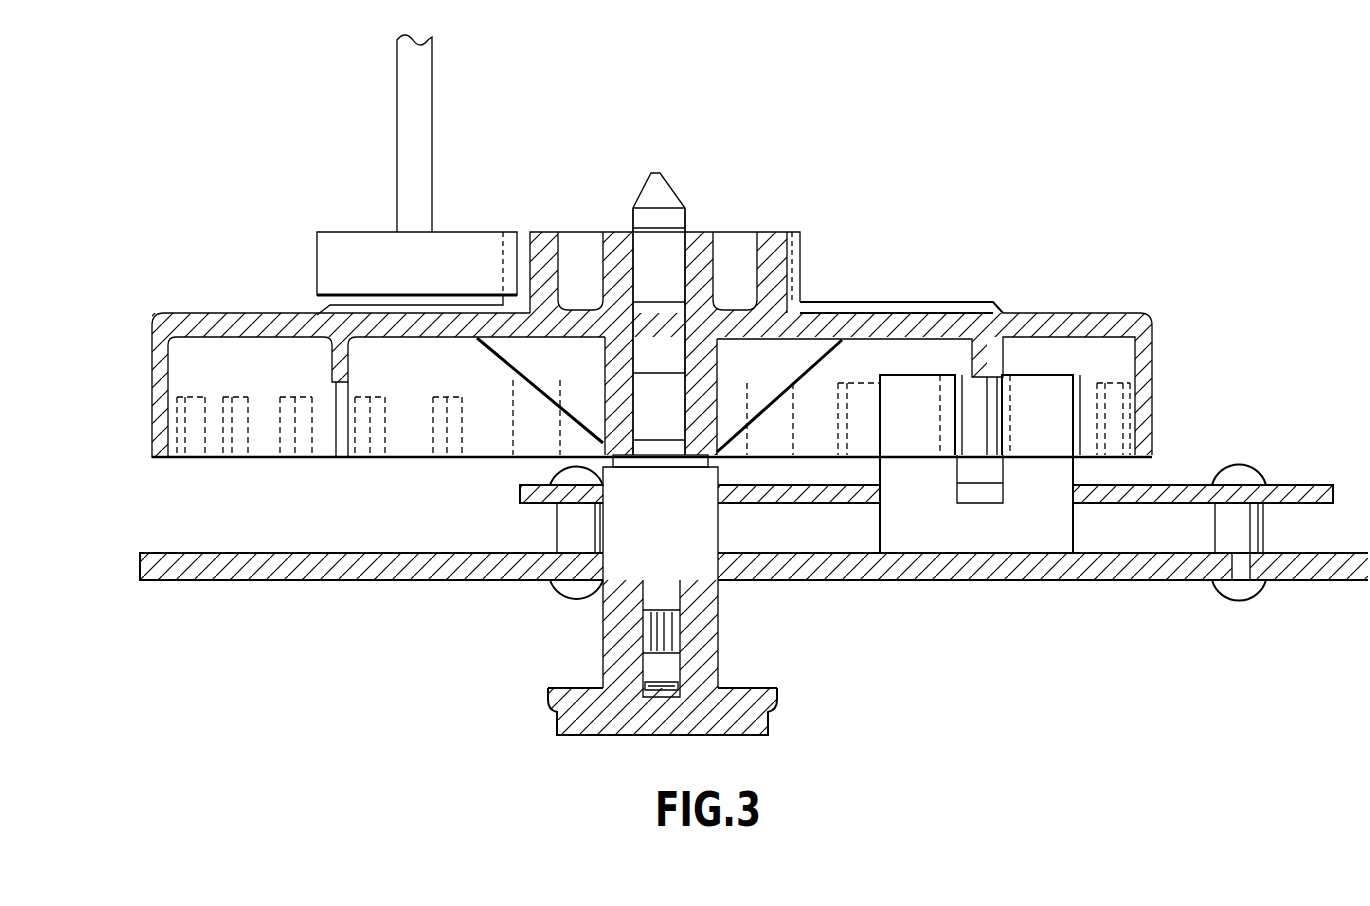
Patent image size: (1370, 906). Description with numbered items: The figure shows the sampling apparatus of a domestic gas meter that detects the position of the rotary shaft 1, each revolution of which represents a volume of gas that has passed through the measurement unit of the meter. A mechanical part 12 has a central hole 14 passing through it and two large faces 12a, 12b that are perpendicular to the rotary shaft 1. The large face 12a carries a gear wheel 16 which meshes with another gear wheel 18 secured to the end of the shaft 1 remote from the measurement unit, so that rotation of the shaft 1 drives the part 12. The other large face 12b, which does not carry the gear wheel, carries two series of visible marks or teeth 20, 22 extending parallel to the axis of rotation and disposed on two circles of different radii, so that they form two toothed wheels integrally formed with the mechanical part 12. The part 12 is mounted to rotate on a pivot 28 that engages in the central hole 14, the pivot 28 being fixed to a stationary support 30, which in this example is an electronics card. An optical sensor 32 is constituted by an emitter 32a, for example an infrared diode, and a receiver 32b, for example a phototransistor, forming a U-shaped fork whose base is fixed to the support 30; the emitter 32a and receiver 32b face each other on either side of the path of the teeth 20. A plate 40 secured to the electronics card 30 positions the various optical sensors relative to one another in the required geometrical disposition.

The rotary shaft 1 is at (410, 115).
The mechanical part 12 is at (777, 292).
The large face 12a is at (862, 302).
The large face 12b is at (410, 340).
The central hole 14 is at (678, 256).
The gear wheel 16 is at (778, 232).
The gear wheel 18 is at (327, 265).
The teeth 20 is at (335, 362).
The teeth 22 is at (152, 385).
The pivot 28 is at (707, 523).
The stationary support 30 is at (1065, 580).
The optical sensor 32 is at (918, 530).
The emitter 32a is at (905, 397).
The second terminal 32b is at (1040, 403).
The plate 40 is at (1140, 507).